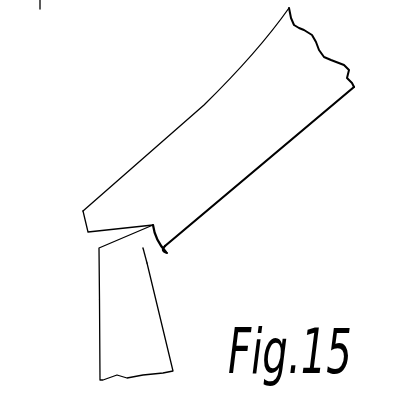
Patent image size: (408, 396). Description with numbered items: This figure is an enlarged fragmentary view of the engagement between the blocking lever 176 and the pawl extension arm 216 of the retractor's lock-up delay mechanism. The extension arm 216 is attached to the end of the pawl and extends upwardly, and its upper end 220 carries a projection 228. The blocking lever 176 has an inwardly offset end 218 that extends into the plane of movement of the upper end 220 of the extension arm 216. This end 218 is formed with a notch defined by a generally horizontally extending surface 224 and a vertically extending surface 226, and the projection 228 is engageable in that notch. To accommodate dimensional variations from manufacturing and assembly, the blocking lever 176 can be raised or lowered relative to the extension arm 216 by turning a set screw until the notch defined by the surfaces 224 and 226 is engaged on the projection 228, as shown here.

The blocking lever 176 is at (311, 123).
The extension arm 216 is at (115, 354).
The inwardly offset end 218 is at (188, 135).
The upper end 220 is at (113, 266).
The horizontally extending surface 224 is at (106, 228).
The vertically extending surface 226 is at (167, 253).
The projection 228 is at (143, 248).